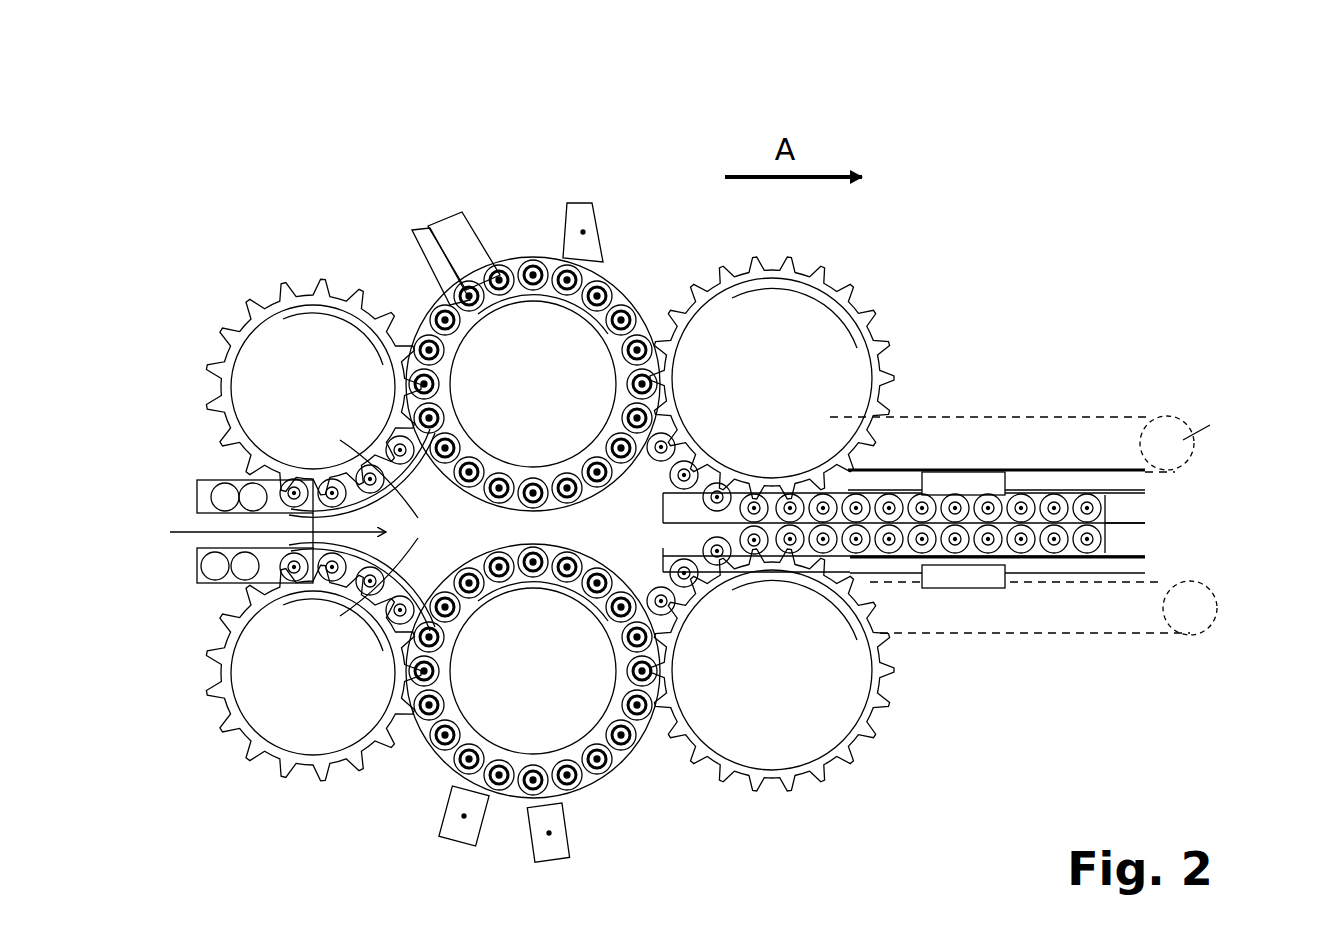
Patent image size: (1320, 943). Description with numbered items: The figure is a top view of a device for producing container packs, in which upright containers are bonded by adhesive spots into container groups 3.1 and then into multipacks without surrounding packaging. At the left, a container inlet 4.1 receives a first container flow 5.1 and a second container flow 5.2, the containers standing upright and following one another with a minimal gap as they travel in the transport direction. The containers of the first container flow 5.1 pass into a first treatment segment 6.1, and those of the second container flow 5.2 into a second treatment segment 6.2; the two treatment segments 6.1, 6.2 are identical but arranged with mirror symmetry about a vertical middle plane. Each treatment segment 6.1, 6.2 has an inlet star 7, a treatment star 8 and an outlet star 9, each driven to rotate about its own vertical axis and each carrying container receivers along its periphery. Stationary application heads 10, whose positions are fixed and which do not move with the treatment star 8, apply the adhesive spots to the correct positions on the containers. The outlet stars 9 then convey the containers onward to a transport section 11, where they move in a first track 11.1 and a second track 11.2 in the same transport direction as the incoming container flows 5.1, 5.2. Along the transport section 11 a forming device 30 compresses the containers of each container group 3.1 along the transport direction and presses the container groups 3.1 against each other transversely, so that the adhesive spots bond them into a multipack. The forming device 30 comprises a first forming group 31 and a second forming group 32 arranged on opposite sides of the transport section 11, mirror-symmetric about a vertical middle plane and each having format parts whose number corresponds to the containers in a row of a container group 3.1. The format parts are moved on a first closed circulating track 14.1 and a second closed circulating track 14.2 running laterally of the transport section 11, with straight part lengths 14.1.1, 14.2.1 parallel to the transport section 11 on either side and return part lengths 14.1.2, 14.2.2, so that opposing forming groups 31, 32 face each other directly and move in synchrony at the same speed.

The container group 3.1 is at (1100, 565).
The container inlet 4.1 is at (181, 608).
The first container flow 5.1 is at (233, 497).
The second container flow 5.2 is at (215, 567).
The first treatment segment 6.1 is at (495, 178).
The second treatment segment 6.2 is at (677, 792).
The inlet star 7 is at (325, 340).
The treatment star 8 is at (575, 338).
The outlet star 9 is at (805, 300).
The application head 10 is at (455, 225).
The transport section 11 is at (1212, 448).
The first track 11.1 is at (1142, 507).
The second track 11.2 is at (1150, 532).
The first closed circulating track 14.1 is at (1074, 400).
The part length of the first circulating track 14.1.1 is at (897, 462).
The part length of the first circulating track 14.1.2 is at (1086, 418).
The second closed circulating track 14.2 is at (1124, 660).
The part length of the second circulating track 14.2.1 is at (1073, 587).
The part length of the second circulating track 14.2.2 is at (1005, 637).
The forming device 30 is at (962, 330).
The first forming group 31 is at (993, 470).
The second forming group 32 is at (965, 590).